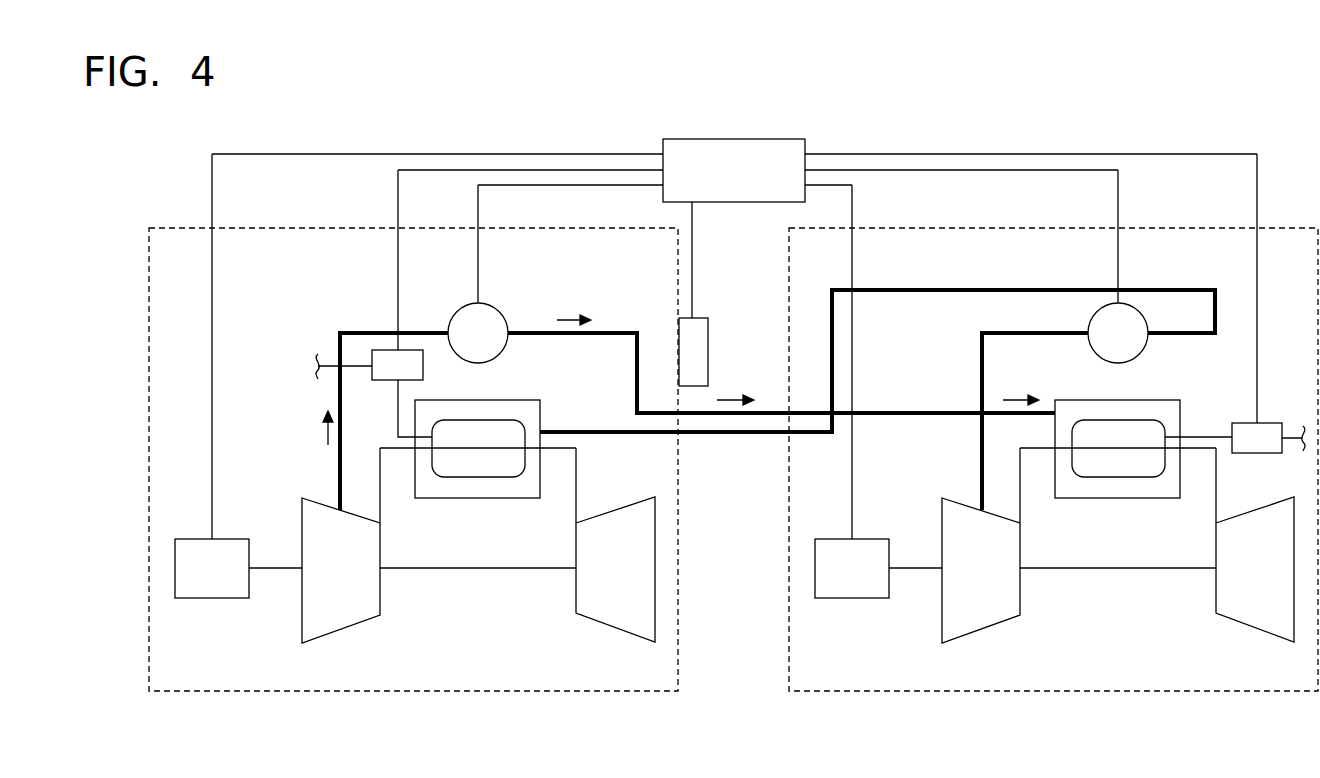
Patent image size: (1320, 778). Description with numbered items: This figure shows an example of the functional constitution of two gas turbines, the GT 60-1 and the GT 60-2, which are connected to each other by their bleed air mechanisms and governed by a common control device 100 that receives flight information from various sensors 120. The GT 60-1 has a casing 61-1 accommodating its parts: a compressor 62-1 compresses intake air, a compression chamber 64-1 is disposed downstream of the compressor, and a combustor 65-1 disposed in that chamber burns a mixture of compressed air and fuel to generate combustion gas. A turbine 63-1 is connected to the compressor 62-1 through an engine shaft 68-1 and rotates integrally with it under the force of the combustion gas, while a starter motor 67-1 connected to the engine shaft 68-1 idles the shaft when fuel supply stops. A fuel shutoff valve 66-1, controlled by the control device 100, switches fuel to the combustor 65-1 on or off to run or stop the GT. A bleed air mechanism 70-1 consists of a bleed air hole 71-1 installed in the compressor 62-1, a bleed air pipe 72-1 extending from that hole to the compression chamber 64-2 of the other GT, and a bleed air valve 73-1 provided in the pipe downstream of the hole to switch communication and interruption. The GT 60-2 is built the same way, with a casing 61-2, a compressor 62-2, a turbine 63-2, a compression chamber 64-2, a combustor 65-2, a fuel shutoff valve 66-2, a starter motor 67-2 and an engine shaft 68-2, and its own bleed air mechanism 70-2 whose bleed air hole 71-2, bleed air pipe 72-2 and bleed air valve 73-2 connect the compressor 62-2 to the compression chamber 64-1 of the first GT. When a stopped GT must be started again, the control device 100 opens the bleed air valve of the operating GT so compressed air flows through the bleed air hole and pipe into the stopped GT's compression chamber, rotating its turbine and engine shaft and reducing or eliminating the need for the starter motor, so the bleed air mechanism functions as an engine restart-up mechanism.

The control device 100 is at (745, 139).
The various sensors 120 is at (708, 343).
The GT 60-1 is at (602, 499).
The GT 60-2 is at (929, 499).
The casing 61-1 is at (418, 692).
The casing 61-2 is at (1058, 692).
The compressor 62-1 is at (343, 630).
The compressor 62-2 is at (983, 630).
The turbine 63-1 is at (611, 627).
The turbine 63-2 is at (1251, 627).
The compression chamber 64-1 is at (484, 475).
The compression chamber 64-2 is at (1124, 475).
The combustor 65-1 is at (448, 478).
The combustor 65-2 is at (1088, 478).
The fuel shutoff valve 66-1 is at (423, 365).
The fuel shutoff valve 66-2 is at (1240, 423).
The starter motor 67-1 is at (210, 598).
The starter motor 67-2 is at (850, 598).
The engine shaft 68-1 is at (478, 569).
The engine shaft 68-2 is at (1118, 569).
The bleed air mechanism 70-1 is at (356, 319).
The bleed air mechanism 70-2 is at (914, 302).
The bleed air hole 71-1 is at (338, 505).
The bleed air hole 71-2 is at (978, 505).
The bleed air pipe 72-1 is at (591, 334).
The bleed air pipe 72-2 is at (959, 289).
The bleed air valve 73-1 is at (492, 306).
The bleed air valve 73-2 is at (1097, 355).